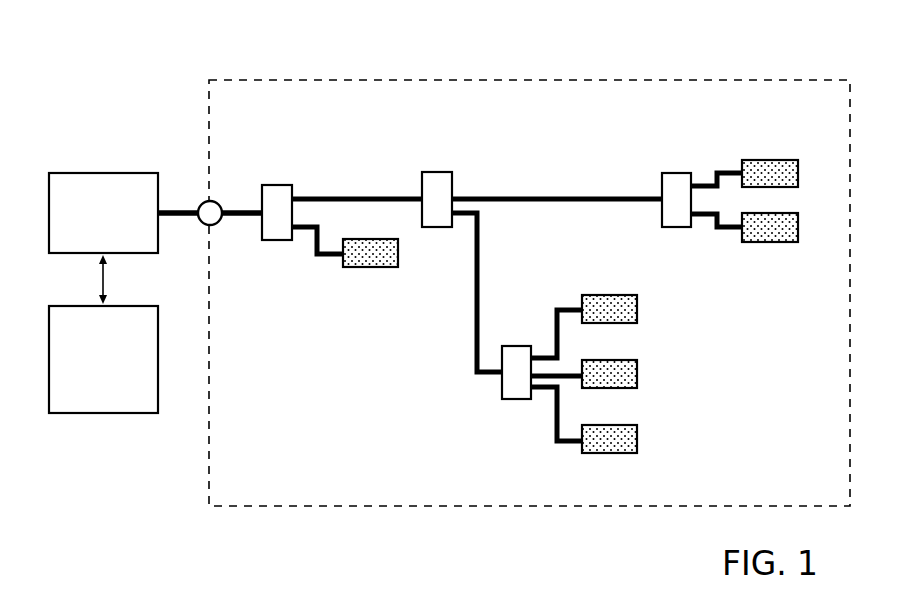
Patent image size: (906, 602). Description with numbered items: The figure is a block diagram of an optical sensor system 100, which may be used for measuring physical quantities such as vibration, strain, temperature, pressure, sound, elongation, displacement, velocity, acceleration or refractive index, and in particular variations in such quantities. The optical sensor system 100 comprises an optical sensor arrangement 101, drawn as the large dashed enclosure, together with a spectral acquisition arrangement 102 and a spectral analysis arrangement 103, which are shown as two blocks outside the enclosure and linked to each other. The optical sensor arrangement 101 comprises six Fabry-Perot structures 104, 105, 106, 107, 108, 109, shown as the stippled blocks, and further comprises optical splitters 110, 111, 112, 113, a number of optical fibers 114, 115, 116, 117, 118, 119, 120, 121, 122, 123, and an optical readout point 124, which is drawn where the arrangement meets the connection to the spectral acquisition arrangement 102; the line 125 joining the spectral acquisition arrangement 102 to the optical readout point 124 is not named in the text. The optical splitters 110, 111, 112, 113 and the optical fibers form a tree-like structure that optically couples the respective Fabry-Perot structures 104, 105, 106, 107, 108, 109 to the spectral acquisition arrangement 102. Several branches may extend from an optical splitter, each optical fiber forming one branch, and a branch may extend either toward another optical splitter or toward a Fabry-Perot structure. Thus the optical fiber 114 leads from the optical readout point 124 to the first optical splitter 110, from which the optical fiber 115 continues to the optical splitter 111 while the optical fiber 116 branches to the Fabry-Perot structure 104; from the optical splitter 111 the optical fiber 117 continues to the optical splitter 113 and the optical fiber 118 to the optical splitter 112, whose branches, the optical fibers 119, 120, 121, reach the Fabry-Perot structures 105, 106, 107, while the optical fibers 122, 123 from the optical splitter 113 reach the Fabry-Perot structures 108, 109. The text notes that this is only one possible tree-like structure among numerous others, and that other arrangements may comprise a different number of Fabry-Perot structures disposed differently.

The optical sensor system 100 is at (40, 52).
The optical sensor arrangement 101 is at (529, 258).
The spectral acquisition arrangement 102 is at (103, 175).
The spectral analysis arrangement 103 is at (103, 394).
The Fabry-Perot structure 104 is at (370, 288).
The Fabry-Perot structure 105 is at (652, 311).
The Fabry-Perot structure 106 is at (652, 376).
The Fabry-Perot structure 107 is at (652, 442).
The Fabry-Perot structure 108 is at (778, 150).
The Fabry-Perot structure 109 is at (779, 255).
The optical splitter 110 is at (285, 177).
The optical splitter 111 is at (444, 171).
The optical splitter 112 is at (509, 408).
The optical splitter 113 is at (684, 171).
The optical fiber 114 is at (242, 185).
The optical fiber 115 is at (357, 170).
The optical fiber 116 is at (309, 270).
The optical fiber 117 is at (557, 171).
The optical fiber 118 is at (462, 314).
The optical fiber 119 is at (547, 303).
The optical fiber 120 is at (579, 353).
The optical fiber 121 is at (556, 442).
The optical fiber 122 is at (725, 157).
The optical fiber 123 is at (713, 248).
The optical readout point 124 is at (194, 176).
The supply line 125 is at (179, 242).